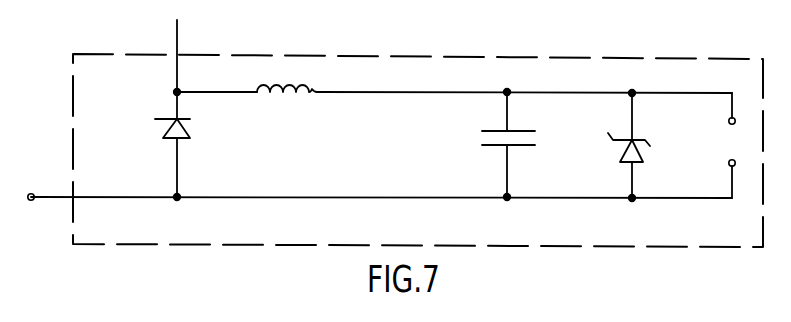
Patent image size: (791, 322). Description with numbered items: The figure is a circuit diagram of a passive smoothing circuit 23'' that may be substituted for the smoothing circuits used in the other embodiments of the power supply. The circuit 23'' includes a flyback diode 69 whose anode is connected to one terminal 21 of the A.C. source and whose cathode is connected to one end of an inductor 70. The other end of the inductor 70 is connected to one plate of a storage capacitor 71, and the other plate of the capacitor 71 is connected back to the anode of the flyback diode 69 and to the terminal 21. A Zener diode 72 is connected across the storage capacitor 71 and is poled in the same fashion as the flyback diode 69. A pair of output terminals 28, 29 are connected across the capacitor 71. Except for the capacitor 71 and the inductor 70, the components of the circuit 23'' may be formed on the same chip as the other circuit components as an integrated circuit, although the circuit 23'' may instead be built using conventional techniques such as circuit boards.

The terminal 21 is at (31, 194).
The passive smoothing circuit 23'' is at (418, 132).
The output terminal 28 is at (728, 121).
The output terminal 29 is at (728, 163).
The flyback diode 69 is at (190, 122).
The inductor 70 is at (298, 92).
The storage capacitor 71 is at (525, 148).
The Zener diode 72 is at (622, 163).